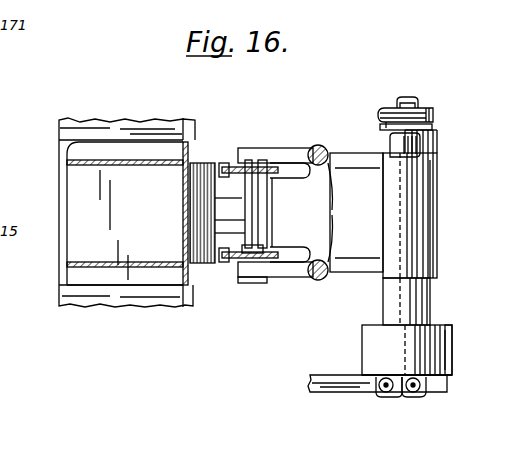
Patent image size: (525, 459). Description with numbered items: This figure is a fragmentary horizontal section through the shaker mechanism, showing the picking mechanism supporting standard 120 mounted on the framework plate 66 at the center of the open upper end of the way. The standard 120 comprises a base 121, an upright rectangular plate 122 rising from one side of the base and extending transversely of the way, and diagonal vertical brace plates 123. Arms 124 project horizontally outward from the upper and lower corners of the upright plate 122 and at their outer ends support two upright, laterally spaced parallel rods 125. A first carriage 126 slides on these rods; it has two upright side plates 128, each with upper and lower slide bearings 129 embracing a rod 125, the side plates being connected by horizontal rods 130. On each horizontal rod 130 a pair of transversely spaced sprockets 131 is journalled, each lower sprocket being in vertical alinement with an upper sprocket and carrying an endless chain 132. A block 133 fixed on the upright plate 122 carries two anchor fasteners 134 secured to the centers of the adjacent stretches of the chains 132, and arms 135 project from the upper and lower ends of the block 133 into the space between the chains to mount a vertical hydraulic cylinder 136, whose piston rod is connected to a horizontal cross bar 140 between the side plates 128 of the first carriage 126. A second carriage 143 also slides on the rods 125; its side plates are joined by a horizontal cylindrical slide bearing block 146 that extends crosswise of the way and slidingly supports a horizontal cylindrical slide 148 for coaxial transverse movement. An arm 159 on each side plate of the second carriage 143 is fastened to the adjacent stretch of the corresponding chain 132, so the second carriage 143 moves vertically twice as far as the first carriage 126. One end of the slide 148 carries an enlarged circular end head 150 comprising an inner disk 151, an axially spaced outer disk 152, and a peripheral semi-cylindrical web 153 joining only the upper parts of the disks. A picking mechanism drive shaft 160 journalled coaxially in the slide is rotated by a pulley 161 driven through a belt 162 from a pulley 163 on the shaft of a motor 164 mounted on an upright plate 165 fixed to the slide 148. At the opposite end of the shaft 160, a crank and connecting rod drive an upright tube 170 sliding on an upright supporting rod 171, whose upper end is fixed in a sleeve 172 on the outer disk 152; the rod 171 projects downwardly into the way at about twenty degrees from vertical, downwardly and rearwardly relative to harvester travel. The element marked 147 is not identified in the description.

The framework plate 66 is at (71, 118).
The picking mechanism supporting standard 120 is at (390, 65).
The base 121 is at (67, 190).
The upright rectangular plate 122 is at (183, 179).
The diagonal vertical brace plates 123 is at (67, 156).
The arms 124 is at (303, 150).
The upright rods 125 is at (328, 150).
The first carriage 126 is at (266, 285).
The side plates 128 is at (270, 148).
The slide bearings 129 is at (355, 212).
The horizontal rods 130 is at (243, 284).
The sprockets 131 is at (272, 178).
The endless chain 132 is at (238, 165).
The block 133 is at (196, 189).
The anchor fasteners 134 is at (226, 165).
The arms 135 is at (230, 220).
The vertical hydraulic cylinder 136 is at (230, 232).
The horizontal cross bar 140 is at (215, 199).
The second carriage 143 is at (440, 167).
The horizontal cylindrical slide bearing block 146 is at (428, 228).
The frame member 147 is at (360, 187).
The horizontal cylindrical slide 148 is at (418, 302).
The enlarged circular end head 150 is at (456, 345).
The inner disk 151 is at (447, 326).
The outer disk 152 is at (452, 372).
The peripheral semi-cylindrical web 153 is at (440, 362).
The arm 159 is at (306, 246).
The picking mechanism drive shaft 160 is at (406, 96).
The pulley 161 is at (430, 107).
The belt 162 is at (433, 112).
The pulley 163 is at (388, 113).
The motor 164 is at (400, 157).
The upright plate 165 is at (436, 127).
The upright tube 170 is at (334, 388).
The upright supporting rod 171 is at (386, 397).
The sleeve 172 is at (420, 394).